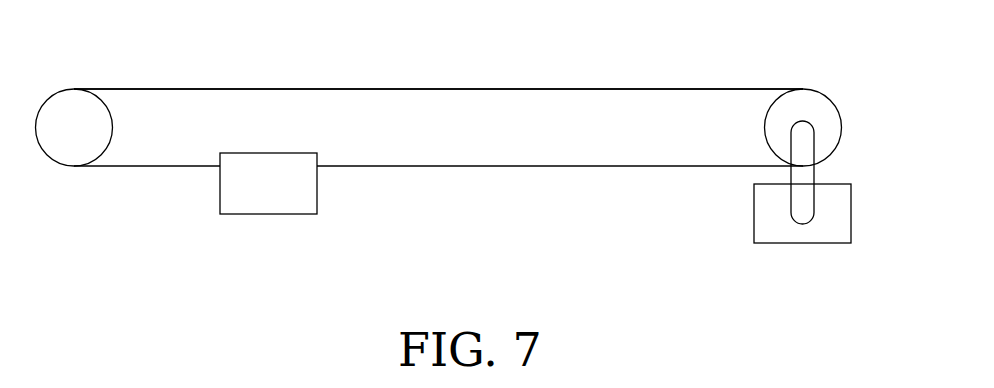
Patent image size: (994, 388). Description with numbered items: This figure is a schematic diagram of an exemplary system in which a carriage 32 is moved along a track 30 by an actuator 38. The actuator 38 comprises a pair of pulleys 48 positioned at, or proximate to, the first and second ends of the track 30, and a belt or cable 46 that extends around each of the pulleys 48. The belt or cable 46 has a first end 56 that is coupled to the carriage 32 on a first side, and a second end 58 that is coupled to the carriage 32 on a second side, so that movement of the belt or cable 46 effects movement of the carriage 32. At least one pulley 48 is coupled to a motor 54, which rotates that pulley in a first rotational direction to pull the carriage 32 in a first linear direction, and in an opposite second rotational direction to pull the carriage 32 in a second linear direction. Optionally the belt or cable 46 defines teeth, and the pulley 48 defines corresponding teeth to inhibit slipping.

The track 30 is at (333, 89).
The belt or cable 46 is at (477, 89).
The pulley 48 is at (74, 145).
The carriage 32 is at (266, 195).
The first end 56 is at (203, 185).
The second direction 58 is at (333, 185).
The motor 54 is at (775, 232).
The actuator 38 is at (873, 223).